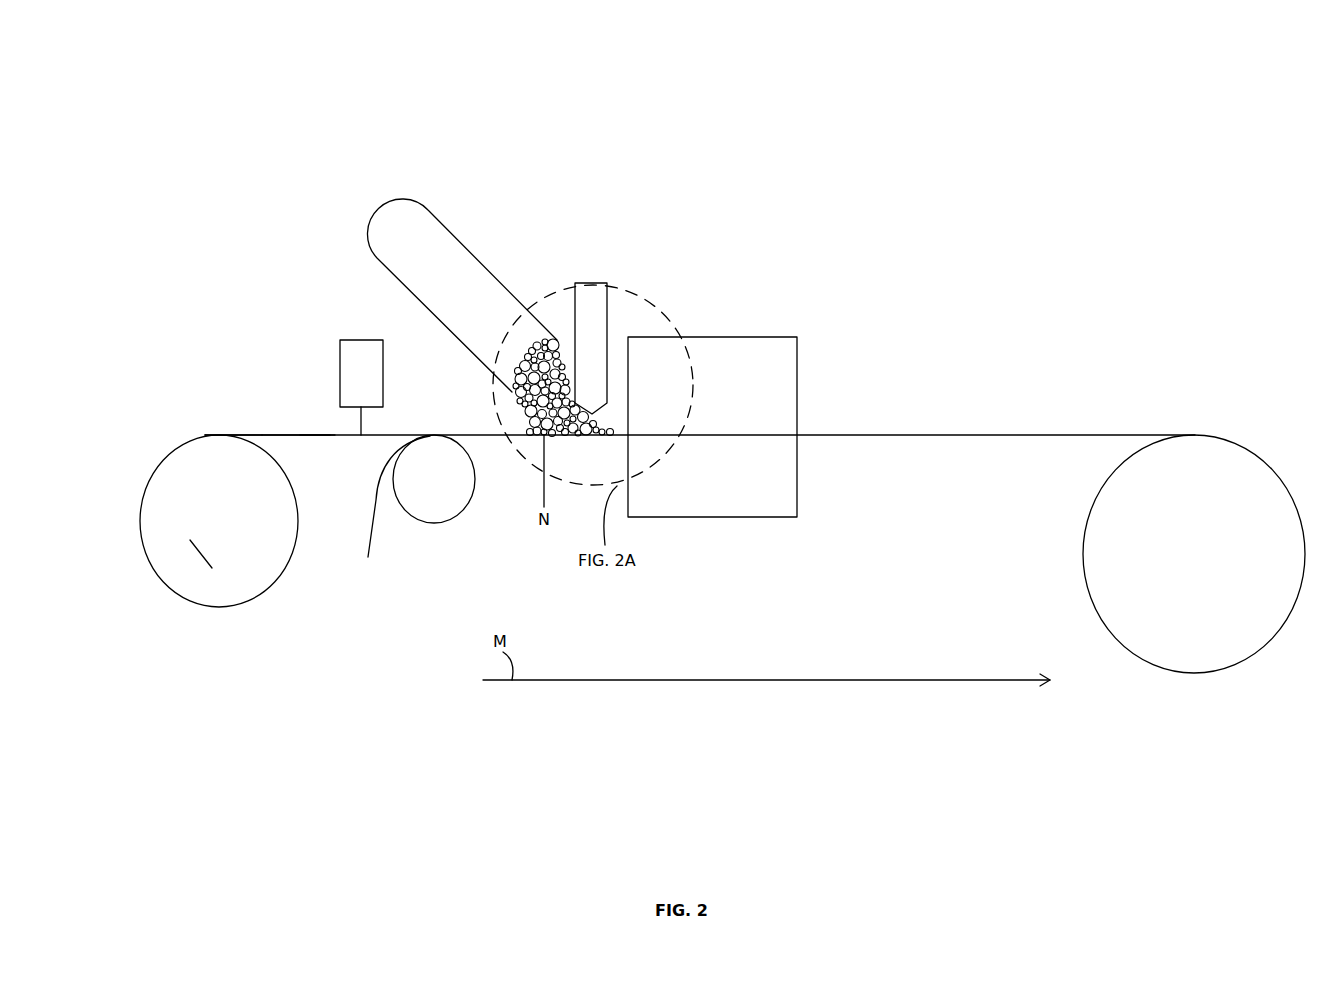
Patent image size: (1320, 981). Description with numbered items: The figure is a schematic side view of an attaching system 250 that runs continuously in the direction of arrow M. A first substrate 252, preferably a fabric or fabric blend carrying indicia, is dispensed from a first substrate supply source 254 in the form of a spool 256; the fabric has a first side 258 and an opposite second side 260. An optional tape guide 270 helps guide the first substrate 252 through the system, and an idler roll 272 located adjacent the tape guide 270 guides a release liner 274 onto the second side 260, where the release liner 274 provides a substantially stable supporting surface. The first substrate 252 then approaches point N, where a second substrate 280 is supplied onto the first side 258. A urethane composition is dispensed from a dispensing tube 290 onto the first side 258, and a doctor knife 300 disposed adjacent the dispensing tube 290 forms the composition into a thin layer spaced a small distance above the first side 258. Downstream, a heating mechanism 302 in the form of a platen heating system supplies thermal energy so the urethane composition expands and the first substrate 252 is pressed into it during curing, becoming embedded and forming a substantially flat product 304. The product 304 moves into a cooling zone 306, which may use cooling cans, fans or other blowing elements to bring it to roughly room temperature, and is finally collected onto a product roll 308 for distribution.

The attaching system 250 is at (1025, 118).
The first substrate 252 is at (252, 435).
The first substrate supply source 254 is at (255, 597).
The spool 256 is at (212, 568).
The first side 258 is at (293, 435).
The second side 260 is at (312, 438).
The tape guide 270 is at (362, 350).
The idler roll 272 is at (462, 487).
The release liner 274 is at (372, 538).
The second substrate 280 is at (550, 337).
The dispensing tube 290 is at (453, 255).
The doctor knife 300 is at (597, 308).
The heating mechanism 302 is at (703, 355).
The product 304 is at (851, 434).
The cooling zone 306 is at (995, 416).
The product roll 308 is at (1247, 468).